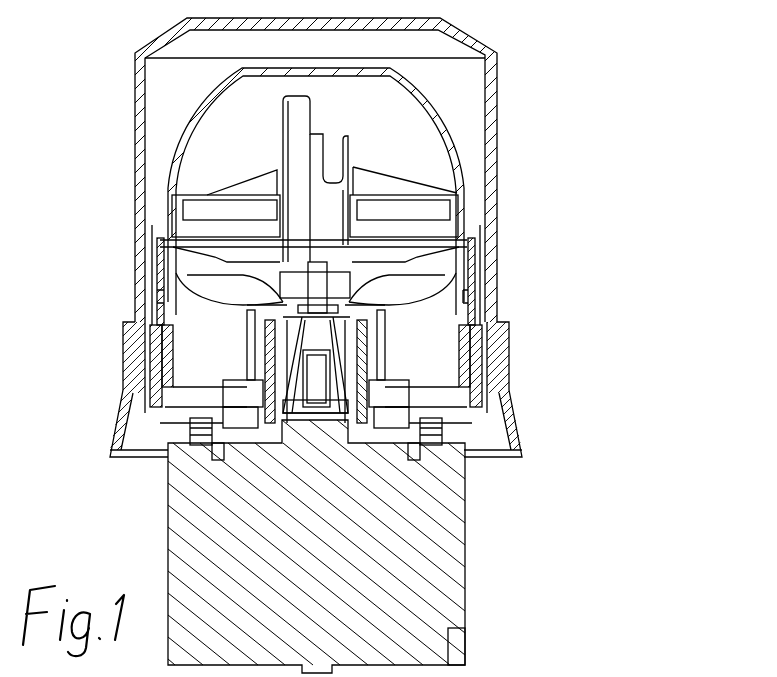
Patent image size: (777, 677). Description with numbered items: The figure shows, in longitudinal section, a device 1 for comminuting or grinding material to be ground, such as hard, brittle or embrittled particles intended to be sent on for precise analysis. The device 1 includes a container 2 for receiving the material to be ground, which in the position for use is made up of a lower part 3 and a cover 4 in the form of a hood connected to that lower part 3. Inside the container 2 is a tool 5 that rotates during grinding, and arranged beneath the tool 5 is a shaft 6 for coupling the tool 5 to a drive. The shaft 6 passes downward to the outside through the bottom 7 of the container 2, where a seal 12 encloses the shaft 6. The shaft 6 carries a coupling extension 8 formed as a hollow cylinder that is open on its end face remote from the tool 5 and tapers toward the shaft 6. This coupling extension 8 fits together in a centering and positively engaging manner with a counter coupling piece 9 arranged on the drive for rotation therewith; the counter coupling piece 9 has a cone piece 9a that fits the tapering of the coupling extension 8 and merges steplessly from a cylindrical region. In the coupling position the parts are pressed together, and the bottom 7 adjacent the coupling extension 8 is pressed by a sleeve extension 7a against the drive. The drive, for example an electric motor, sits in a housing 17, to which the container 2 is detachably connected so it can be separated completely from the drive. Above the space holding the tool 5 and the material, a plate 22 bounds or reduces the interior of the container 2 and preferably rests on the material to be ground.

The device 1 is at (533, 265).
The container 2 is at (467, 137).
The lower part 3 is at (430, 300).
The cover 4 is at (437, 108).
The tool 5 is at (370, 287).
The shaft 6 is at (283, 343).
The bottom 7 is at (195, 272).
The sleeve extension 7a is at (463, 373).
The coupling extension 8 is at (320, 297).
The counter coupling piece 9 is at (333, 368).
The cone piece 9a is at (300, 345).
The seal 12 is at (278, 272).
The housing 17 is at (521, 450).
The plate 22 is at (393, 248).